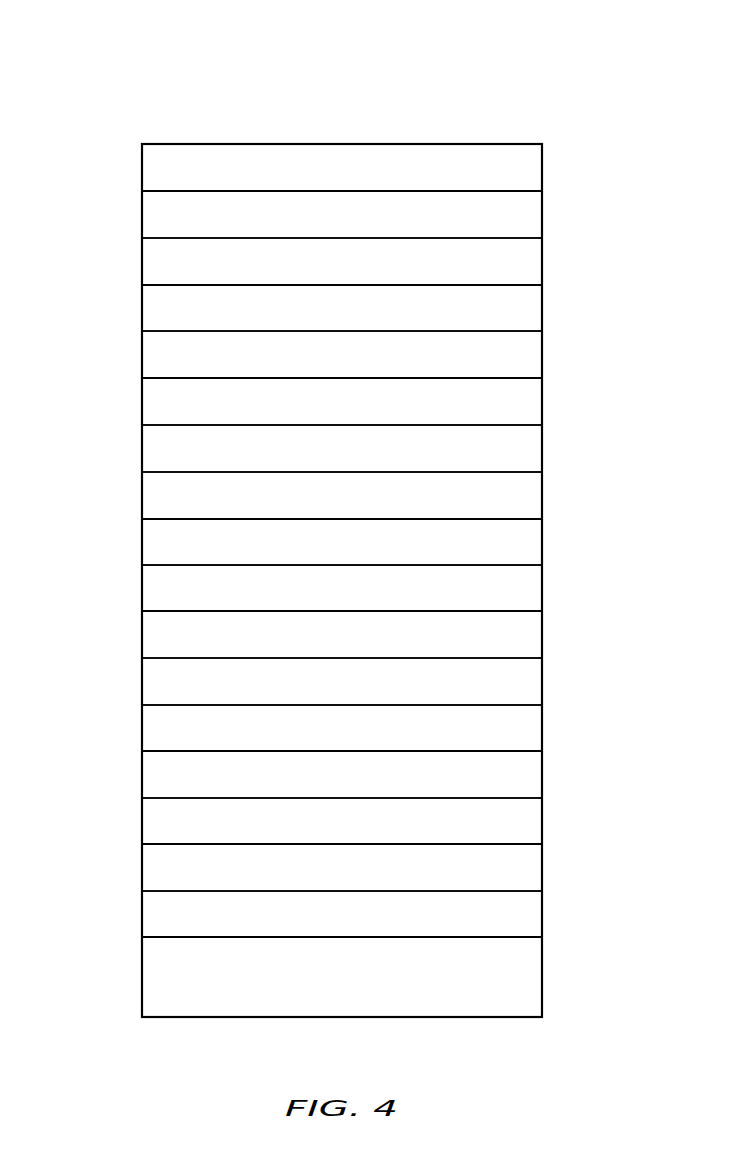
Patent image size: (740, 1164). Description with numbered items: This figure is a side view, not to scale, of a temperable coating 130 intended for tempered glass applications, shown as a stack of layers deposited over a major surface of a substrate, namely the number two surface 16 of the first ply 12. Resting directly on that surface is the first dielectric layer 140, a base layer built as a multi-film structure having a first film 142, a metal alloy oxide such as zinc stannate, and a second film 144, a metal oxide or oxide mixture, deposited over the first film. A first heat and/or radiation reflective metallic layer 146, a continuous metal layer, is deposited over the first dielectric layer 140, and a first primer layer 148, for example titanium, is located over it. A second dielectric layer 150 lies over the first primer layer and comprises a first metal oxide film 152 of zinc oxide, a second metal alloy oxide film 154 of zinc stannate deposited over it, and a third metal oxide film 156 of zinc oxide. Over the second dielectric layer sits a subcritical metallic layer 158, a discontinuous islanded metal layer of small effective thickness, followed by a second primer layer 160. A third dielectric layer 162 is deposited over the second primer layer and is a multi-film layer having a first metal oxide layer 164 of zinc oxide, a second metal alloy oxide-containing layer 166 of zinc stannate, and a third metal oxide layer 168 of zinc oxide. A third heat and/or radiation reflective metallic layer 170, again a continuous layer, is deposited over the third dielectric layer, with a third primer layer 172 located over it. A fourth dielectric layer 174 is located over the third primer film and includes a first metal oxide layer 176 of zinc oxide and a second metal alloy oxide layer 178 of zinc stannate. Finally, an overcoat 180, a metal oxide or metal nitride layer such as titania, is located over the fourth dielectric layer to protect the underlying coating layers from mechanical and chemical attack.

The temperable coating 130 is at (565, 90).
The first ply 12 is at (168, 975).
The No. 2 surface 16 is at (168, 937).
The first dielectric layer 140 is at (555, 843).
The first film 142 is at (152, 917).
The second film 144 is at (152, 870).
The first heat and/or radiation reflective metallic layer 146 is at (152, 824).
The first primer layer 148 is at (152, 777).
The second dielectric layer 150 is at (555, 611).
The first metal oxide film 152 is at (152, 731).
The second metal alloy oxide film 154 is at (152, 684).
The third metal oxide film 156 is at (157, 639).
The subcritical metallic layer 158 is at (152, 591).
The second primer layer 160 is at (152, 545).
The third dielectric layer 162 is at (555, 377).
The first metal oxide layer 164 is at (152, 498).
The second metal alloy oxide-containing layer 166 is at (152, 451).
The third metal oxide layer 168 is at (155, 406).
The third heat and/or radiation reflective metallic layer 170 is at (152, 357).
The third primer layer 172 is at (152, 311).
The fourth dielectric layer 174 is at (555, 191).
The first metal oxide layer 176 is at (152, 264).
The second metal alloy oxide layer 178 is at (152, 217).
The overcoat 180 is at (152, 170).